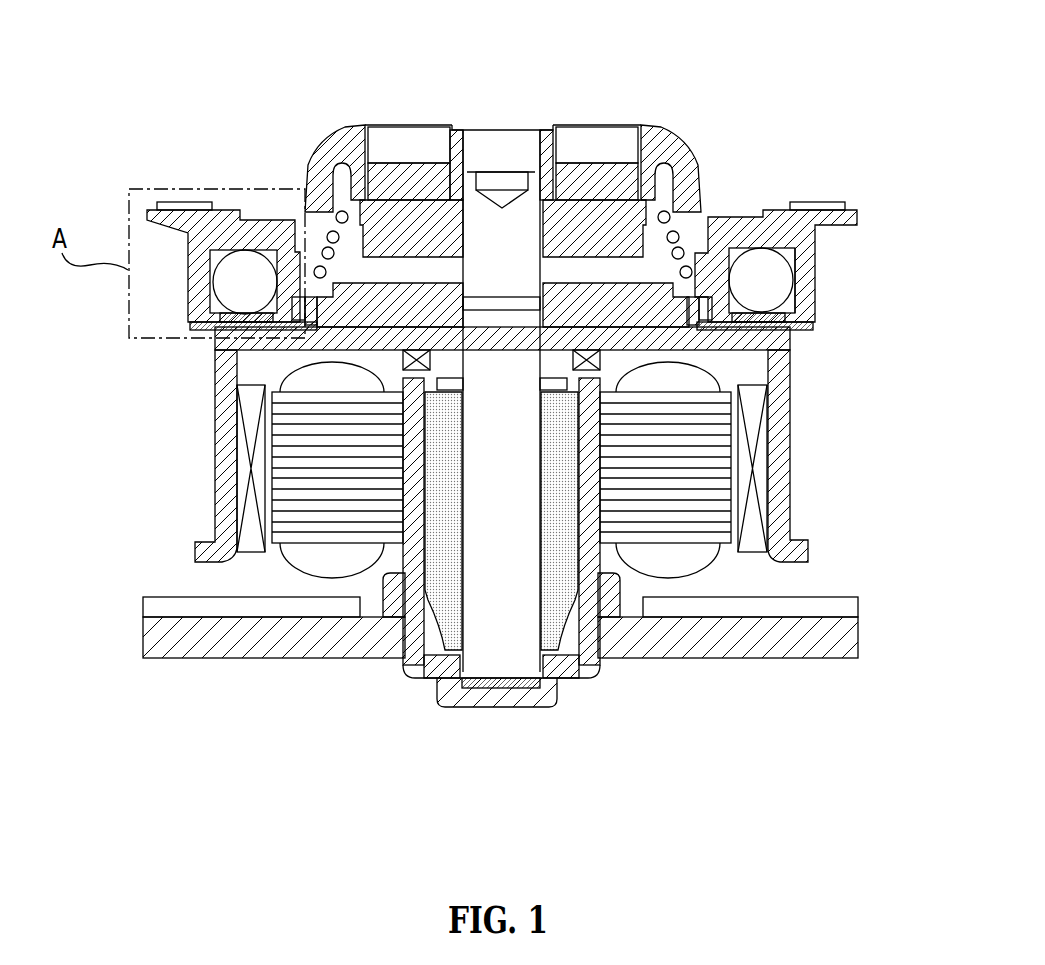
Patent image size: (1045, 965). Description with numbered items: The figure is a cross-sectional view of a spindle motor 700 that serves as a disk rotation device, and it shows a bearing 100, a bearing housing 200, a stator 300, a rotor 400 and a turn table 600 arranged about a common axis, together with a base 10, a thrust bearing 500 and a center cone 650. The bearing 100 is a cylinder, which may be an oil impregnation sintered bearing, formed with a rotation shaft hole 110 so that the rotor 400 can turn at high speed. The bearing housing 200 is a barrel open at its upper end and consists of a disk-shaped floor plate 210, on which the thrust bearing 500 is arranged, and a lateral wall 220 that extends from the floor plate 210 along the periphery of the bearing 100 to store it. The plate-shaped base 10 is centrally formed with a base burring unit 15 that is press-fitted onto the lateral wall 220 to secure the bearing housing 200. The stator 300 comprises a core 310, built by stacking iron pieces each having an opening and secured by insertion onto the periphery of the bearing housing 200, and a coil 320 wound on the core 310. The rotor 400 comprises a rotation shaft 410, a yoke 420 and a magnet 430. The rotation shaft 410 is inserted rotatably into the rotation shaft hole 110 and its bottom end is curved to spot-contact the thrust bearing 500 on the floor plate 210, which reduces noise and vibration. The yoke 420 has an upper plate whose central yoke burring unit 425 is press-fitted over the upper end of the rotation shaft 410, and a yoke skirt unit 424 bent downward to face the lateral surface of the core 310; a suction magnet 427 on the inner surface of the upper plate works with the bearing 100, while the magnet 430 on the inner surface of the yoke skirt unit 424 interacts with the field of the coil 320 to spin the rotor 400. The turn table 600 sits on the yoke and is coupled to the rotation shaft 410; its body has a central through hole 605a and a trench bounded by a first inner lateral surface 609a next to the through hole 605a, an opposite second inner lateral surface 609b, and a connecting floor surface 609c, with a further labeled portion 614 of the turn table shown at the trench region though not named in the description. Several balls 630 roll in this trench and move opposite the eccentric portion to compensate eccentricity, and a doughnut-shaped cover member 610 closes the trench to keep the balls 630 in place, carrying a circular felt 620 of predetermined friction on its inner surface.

The spindle motor 700 is at (852, 37).
The center cone 650 is at (605, 127).
The rotor 400 is at (230, 135).
The rotation shaft 410 is at (493, 243).
The yoke 420 is at (334, 327).
The yoke burring unit 425 is at (548, 363).
The suction magnet 427 is at (600, 360).
The magnet 430 is at (240, 348).
The yoke skirt unit 424 is at (227, 488).
The turn table 600 is at (733, 208).
The first inner lateral surface 609a is at (795, 290).
The second inner lateral surface 609b is at (782, 323).
The floor surface 609c is at (785, 255).
The bearing housing recess 614 is at (787, 258).
The ball 630 is at (780, 273).
The circular felt 620 is at (790, 332).
The cover member 610 is at (797, 340).
The through hole 605a is at (463, 300).
The stator 300 is at (883, 468).
The core 310 is at (700, 503).
The coil 320 is at (700, 560).
The bearing housing 200 is at (438, 688).
The floor plate 210 is at (487, 697).
The lateral wall 220 is at (410, 622).
The bearing 100 is at (557, 622).
The rotation shaft hole 110 is at (553, 693).
The thrust bearing 500 is at (507, 693).
The base 10 is at (773, 653).
The base burring unit 15 is at (613, 598).